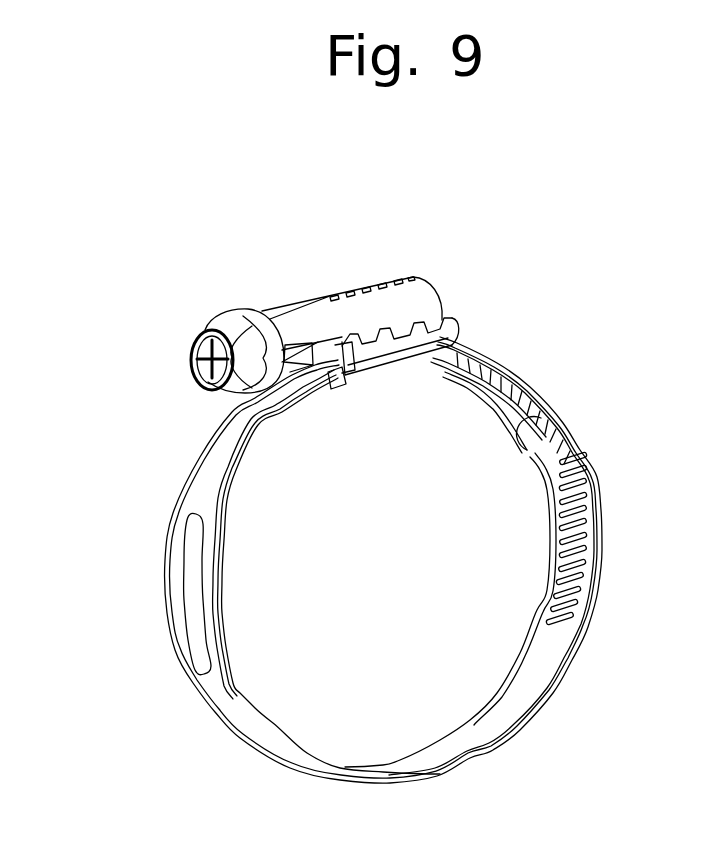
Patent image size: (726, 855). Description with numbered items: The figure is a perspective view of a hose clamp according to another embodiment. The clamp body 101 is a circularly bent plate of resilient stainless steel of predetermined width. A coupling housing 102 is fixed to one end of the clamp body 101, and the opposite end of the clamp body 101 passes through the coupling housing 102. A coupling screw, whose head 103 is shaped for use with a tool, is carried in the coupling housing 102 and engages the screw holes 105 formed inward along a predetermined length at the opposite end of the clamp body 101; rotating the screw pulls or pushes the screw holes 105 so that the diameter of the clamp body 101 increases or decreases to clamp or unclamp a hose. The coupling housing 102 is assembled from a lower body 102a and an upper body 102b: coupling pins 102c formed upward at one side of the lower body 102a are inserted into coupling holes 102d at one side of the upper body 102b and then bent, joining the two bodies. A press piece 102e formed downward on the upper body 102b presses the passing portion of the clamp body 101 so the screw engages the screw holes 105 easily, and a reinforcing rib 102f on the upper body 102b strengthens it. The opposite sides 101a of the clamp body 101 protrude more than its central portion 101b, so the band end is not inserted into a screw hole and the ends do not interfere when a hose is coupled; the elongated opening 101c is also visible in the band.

The clamp body 101 is at (208, 473).
The opposite sides of the clamp body 101a is at (543, 415).
The central portion of the clamp body 101b is at (550, 436).
The slot in band 101c is at (190, 575).
The coupling housing 102 is at (437, 203).
The lower body 102a is at (340, 350).
The upper body 102b is at (410, 277).
The coupling pins 102c is at (442, 317).
The coupling holes 102d is at (443, 320).
The press piece 102e is at (338, 387).
The reinforcing rib 102f is at (287, 307).
The head 103 is at (222, 327).
The screw holes 105 is at (597, 498).